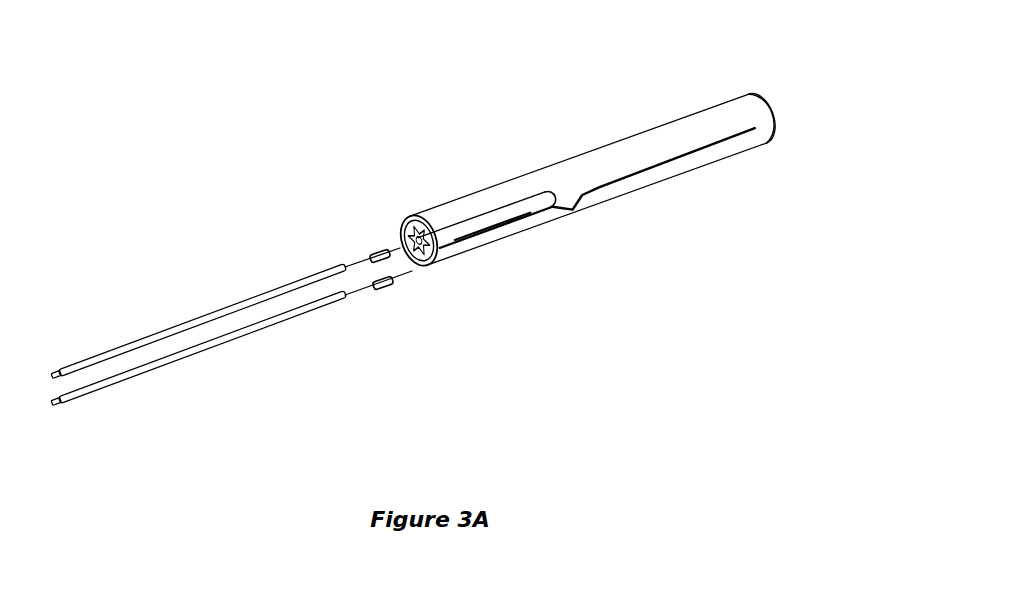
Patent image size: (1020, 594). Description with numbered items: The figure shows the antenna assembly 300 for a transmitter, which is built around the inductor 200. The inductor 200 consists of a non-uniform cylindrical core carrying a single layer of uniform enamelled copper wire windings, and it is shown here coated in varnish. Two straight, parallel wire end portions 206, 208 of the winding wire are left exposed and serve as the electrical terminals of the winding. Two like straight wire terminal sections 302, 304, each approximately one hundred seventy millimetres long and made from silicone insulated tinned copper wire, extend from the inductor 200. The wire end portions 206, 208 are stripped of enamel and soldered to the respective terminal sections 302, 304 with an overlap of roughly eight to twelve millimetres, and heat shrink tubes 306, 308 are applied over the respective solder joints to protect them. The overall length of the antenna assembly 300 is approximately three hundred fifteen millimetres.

The inductor 200 is at (738, 108).
The wire end portion 206 is at (537, 193).
The wire end portion 208 is at (540, 218).
The antenna assembly 300 is at (147, 125).
The wire terminal section 302 is at (137, 344).
The wire terminal section 304 is at (124, 376).
The heat shrink tube 306 is at (375, 252).
The heat shrink tube 308 is at (388, 283).